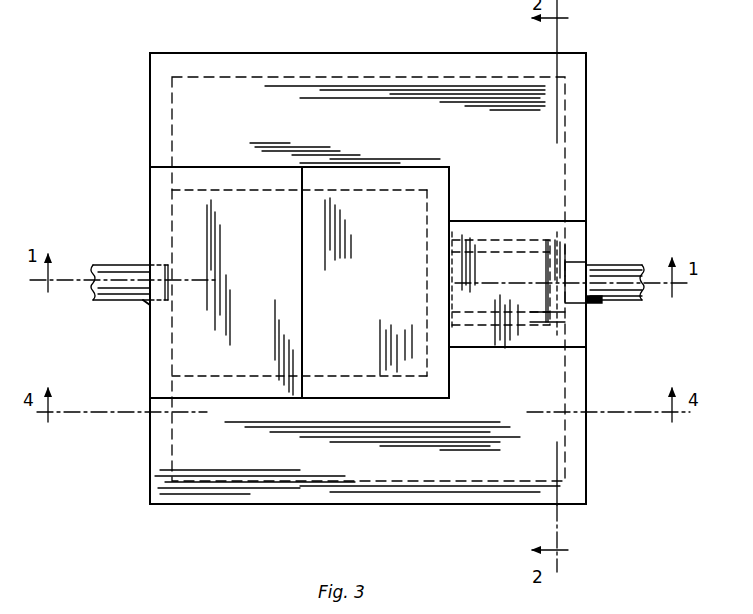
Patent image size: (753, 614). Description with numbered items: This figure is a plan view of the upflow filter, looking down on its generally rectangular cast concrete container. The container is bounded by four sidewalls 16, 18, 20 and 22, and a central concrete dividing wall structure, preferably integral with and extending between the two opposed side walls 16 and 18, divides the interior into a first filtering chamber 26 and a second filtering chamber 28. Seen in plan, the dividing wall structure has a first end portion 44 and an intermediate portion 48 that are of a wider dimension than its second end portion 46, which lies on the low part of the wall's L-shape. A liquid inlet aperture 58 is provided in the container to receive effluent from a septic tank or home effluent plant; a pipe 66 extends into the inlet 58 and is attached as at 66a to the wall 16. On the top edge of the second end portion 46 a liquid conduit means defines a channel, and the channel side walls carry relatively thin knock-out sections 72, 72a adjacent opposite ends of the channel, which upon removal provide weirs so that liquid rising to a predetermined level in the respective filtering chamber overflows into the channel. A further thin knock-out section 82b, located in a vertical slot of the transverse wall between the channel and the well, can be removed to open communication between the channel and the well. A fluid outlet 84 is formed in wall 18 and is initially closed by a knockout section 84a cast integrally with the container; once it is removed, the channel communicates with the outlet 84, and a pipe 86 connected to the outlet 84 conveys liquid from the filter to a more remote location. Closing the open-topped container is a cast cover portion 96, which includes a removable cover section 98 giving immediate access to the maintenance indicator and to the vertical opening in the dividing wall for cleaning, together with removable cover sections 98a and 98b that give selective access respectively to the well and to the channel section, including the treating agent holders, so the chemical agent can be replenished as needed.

The sidewall 16 is at (160, 458).
The sidewall 18 is at (568, 432).
The sidewall 20 is at (365, 68).
The sidewall 22 is at (275, 502).
The first filtering chamber 26 is at (496, 465).
The second filtering chamber 28 is at (465, 97).
The first end portion 44 is at (231, 160).
The second end portion 46 is at (545, 315).
The intermediate portion 48 is at (346, 162).
The liquid inlet aperture 58 is at (158, 262).
The pipe 66 is at (104, 303).
The pipe attachment 66a is at (148, 305).
The knock-out section 72 is at (457, 240).
The knock-out section 72a is at (558, 262).
The knock-out section 82b is at (440, 292).
The fluid outlet 84 is at (600, 303).
The knockout section 84a is at (586, 262).
The pipe 86 is at (624, 264).
The cast cover portion 96 is at (233, 52).
The removable cover section 98 is at (192, 167).
The removable cover section 98a is at (385, 178).
The removable cover section 98b is at (508, 230).